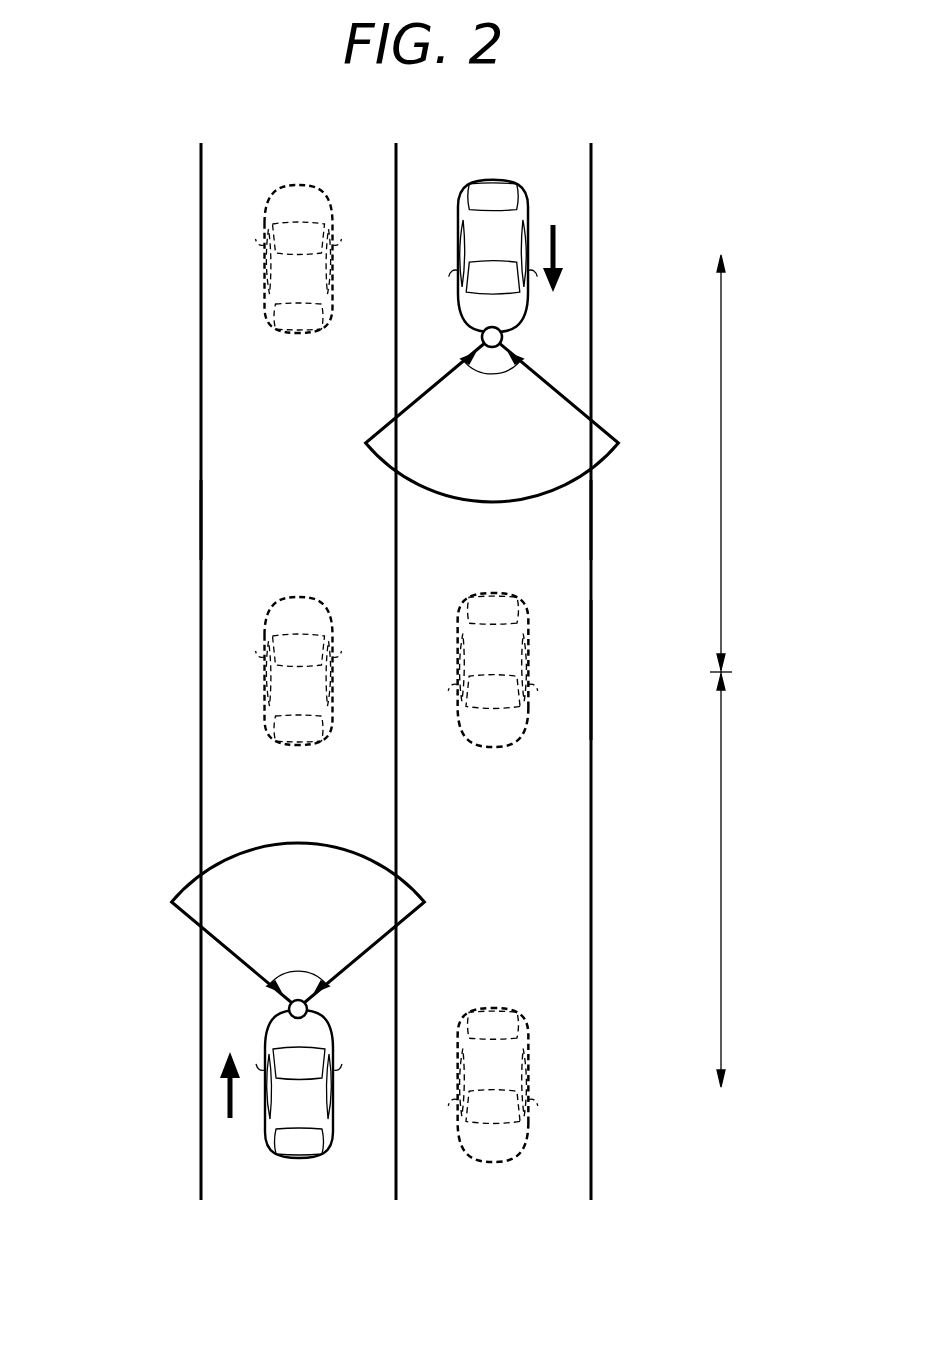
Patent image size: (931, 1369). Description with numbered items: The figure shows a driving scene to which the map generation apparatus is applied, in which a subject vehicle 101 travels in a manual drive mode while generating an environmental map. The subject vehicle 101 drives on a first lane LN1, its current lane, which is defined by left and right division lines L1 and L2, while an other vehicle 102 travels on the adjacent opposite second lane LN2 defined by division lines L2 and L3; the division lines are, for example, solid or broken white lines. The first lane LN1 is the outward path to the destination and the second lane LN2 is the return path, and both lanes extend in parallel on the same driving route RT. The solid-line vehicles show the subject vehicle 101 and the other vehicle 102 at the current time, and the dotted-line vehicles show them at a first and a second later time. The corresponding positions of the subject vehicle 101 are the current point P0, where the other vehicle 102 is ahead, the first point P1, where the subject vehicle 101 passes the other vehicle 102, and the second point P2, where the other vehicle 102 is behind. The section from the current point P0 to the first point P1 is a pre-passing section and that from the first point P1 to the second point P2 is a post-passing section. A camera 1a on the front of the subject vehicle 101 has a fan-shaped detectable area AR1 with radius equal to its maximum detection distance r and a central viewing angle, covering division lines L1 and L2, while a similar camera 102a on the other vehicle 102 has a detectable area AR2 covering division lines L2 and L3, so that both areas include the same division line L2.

The subject vehicle 101 is at (299, 1160).
The camera 1a is at (289, 1009).
The other vehicle 102 is at (494, 180).
The camera 102a is at (503, 337).
The detectable area AR1 is at (268, 865).
The detectable area AR2 is at (574, 408).
The first lane LN1 is at (218, 527).
The second lane LN2 is at (563, 527).
The division line L1 is at (200, 689).
The division line L2 is at (395, 689).
The division line L3 is at (590, 689).
The current point P0 is at (186, 1052).
The first point P1 is at (186, 624).
The second point P2 is at (186, 232).
The driving route RT is at (599, 645).
The maximum detection distance r is at (430, 447).